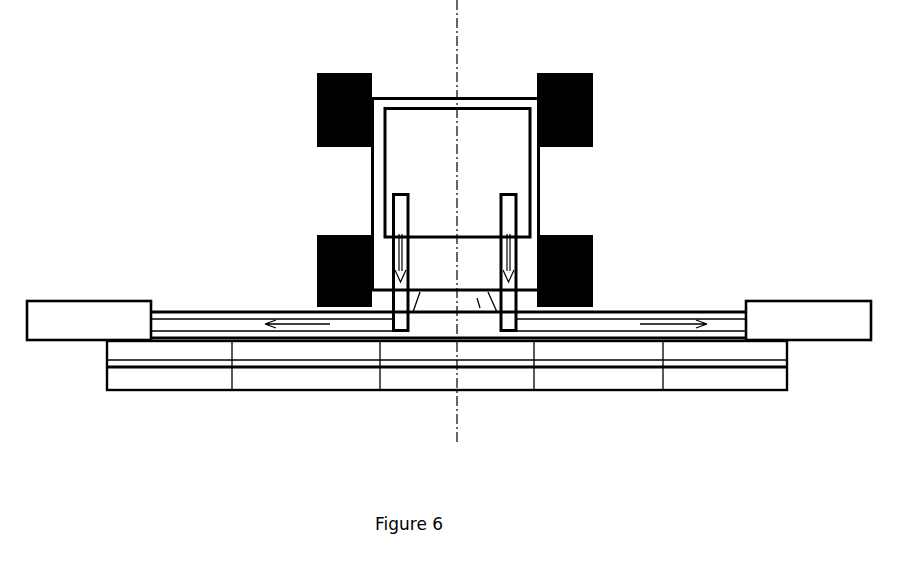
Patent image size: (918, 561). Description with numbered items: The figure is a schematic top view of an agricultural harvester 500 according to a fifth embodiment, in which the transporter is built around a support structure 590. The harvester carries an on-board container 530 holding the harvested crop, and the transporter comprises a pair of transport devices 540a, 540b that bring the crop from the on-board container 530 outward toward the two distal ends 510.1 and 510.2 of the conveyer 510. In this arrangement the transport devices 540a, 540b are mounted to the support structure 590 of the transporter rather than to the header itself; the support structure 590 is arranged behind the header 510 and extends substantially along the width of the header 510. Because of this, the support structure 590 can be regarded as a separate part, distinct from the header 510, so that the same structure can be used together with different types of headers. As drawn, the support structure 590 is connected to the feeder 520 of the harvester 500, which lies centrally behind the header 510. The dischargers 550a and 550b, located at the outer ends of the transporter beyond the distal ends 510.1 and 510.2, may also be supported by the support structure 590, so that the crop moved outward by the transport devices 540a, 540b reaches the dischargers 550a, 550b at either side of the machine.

The agricultural harvester 500 is at (255, 85).
The on-board container 530 is at (401, 177).
The transport device 540a is at (395, 208).
The transport device 540b is at (517, 204).
The discharger 550a is at (88, 310).
The discharger 550b is at (793, 325).
The support structure 590 is at (660, 311).
The header 510 is at (326, 376).
The feeder 520 is at (490, 342).
The distal end of the conveyer 510.1 is at (739, 417).
The distal end of the conveyer 510.2 is at (138, 404).